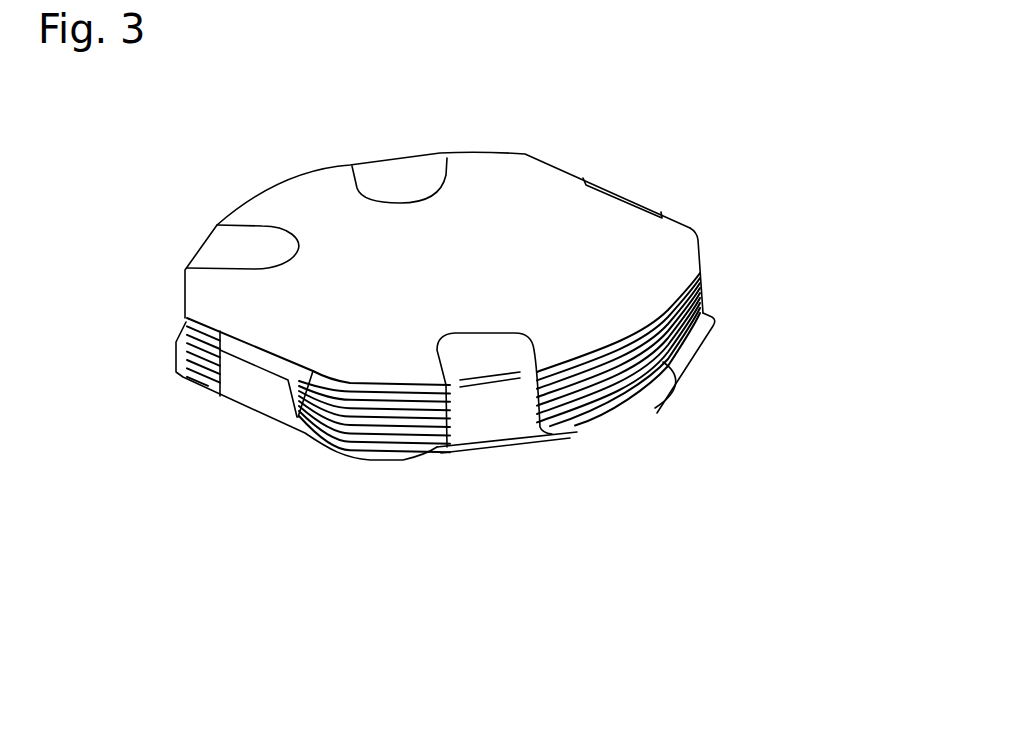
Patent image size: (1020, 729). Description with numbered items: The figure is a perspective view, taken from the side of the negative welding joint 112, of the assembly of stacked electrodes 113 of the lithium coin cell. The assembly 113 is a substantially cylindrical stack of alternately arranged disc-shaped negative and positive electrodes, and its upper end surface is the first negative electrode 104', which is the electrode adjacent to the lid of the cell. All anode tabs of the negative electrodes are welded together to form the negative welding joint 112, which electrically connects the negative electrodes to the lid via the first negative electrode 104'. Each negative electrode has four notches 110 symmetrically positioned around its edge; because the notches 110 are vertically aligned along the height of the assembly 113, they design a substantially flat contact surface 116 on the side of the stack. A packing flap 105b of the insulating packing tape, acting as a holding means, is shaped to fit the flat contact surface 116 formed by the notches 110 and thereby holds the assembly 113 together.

The first negative electrode 104' is at (481, 268).
The notch 110 is at (693, 253).
The flat contact surface 116 is at (702, 302).
The assembly of stacked electrodes 113 is at (613, 383).
The packing flap 105b is at (510, 420).
The negative welding joint 112 is at (246, 384).